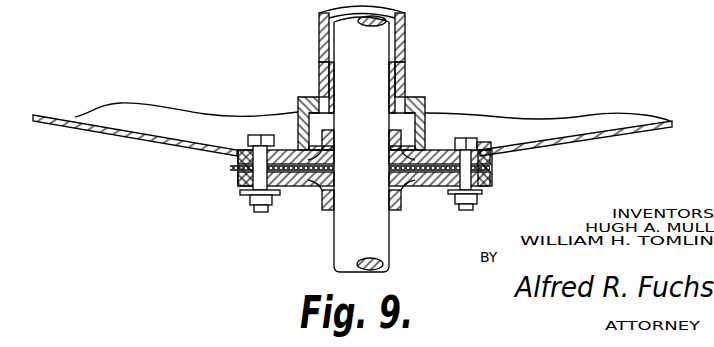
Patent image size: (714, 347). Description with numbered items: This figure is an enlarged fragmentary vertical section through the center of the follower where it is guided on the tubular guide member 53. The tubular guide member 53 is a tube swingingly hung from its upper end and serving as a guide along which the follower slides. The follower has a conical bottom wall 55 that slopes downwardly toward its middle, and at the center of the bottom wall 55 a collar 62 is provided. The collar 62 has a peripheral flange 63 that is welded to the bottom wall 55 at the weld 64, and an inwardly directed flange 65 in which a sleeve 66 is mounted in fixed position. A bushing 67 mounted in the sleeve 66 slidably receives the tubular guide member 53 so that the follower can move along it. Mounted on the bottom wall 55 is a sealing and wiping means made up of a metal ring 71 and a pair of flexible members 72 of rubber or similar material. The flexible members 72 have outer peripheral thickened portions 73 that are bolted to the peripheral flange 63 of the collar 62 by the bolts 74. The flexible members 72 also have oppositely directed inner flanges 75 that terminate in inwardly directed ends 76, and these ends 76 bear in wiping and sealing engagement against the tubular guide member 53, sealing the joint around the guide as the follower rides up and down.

The tubular guide member 53 is at (378, 246).
The conical bottom wall of the follower 55 is at (632, 127).
The collar 62 is at (428, 120).
The peripheral flange 63 is at (300, 148).
The weld 64 is at (487, 146).
The inwardly directed flange 65 is at (406, 96).
The sleeve 66 is at (406, 30).
The bushing 67 is at (322, 83).
The metal ring 71 is at (426, 195).
The flexible members 72 is at (432, 152).
The outer peripheral thickened portions 73 is at (244, 160).
The bolts 74 is at (470, 140).
The inner flanges 75 is at (292, 146).
The inwardly directed ends 76 is at (386, 140).